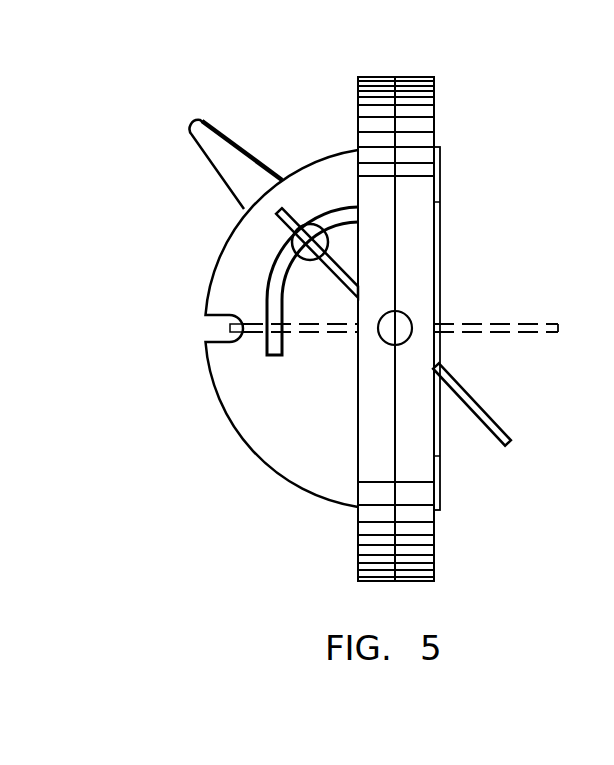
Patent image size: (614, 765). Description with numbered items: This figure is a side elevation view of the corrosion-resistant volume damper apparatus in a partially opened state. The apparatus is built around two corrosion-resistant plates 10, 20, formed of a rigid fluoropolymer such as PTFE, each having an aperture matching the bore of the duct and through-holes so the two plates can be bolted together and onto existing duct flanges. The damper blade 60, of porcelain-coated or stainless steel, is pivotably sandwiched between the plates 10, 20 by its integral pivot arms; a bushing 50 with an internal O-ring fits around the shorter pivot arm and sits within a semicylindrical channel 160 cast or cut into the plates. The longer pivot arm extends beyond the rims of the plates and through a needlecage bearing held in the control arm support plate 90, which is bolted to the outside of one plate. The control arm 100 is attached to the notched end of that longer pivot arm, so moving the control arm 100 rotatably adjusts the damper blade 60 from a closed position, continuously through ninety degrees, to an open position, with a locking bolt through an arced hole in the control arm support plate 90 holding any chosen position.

The corrosion-resistant plate 10 is at (373, 90).
The corrosion-resistant plate 20 is at (417, 93).
The bushing 50 is at (397, 330).
The damper blade 60 is at (527, 325).
The control arm support plate 90 is at (318, 160).
The control arm 100 is at (203, 133).
The semicylindrical channel 160 is at (407, 313).